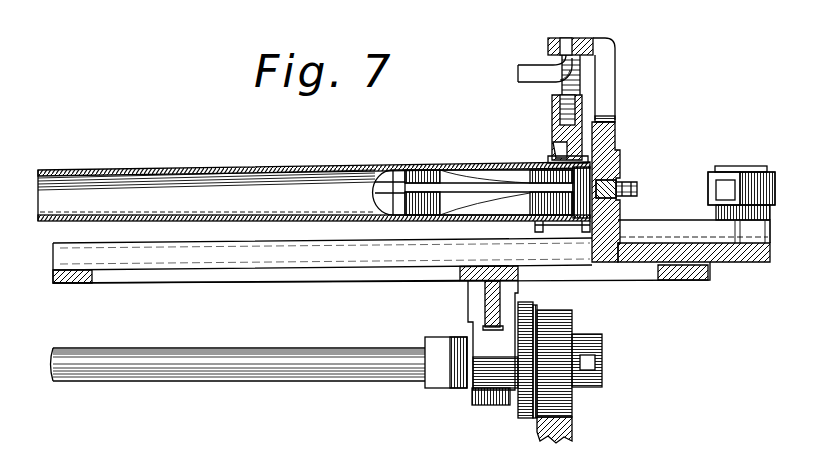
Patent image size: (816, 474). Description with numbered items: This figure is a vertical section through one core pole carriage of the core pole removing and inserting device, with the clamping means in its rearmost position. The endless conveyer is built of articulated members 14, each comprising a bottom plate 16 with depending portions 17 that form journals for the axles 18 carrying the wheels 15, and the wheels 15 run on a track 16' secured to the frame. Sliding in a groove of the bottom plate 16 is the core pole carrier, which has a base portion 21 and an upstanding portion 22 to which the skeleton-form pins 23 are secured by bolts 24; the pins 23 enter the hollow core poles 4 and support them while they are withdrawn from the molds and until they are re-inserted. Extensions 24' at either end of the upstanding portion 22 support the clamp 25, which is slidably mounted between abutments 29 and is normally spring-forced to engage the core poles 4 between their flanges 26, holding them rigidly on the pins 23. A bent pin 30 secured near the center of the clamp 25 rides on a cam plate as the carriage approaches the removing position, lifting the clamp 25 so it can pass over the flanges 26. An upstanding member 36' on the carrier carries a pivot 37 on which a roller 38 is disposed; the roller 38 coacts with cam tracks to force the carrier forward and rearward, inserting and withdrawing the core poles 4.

The core pole 4 is at (322, 163).
The articulated member 14 is at (175, 294).
The wheel 15 is at (572, 395).
The bottom plate 16 is at (381, 275).
The track 16' is at (582, 441).
The depending portion 17 is at (478, 298).
The axle 18 is at (259, 385).
The base portion 21 is at (718, 264).
The upstanding portion 22 is at (617, 146).
The pin 23 is at (478, 178).
The bolt 24 is at (631, 173).
The extension 24' is at (631, 80).
The clamp 25 is at (550, 130).
The flange 26 is at (535, 228).
The abutment 29 is at (548, 40).
The bent pin 30 is at (527, 72).
The upstanding member 36' is at (746, 250).
The pivot 37 is at (751, 166).
The roller 38 is at (710, 190).